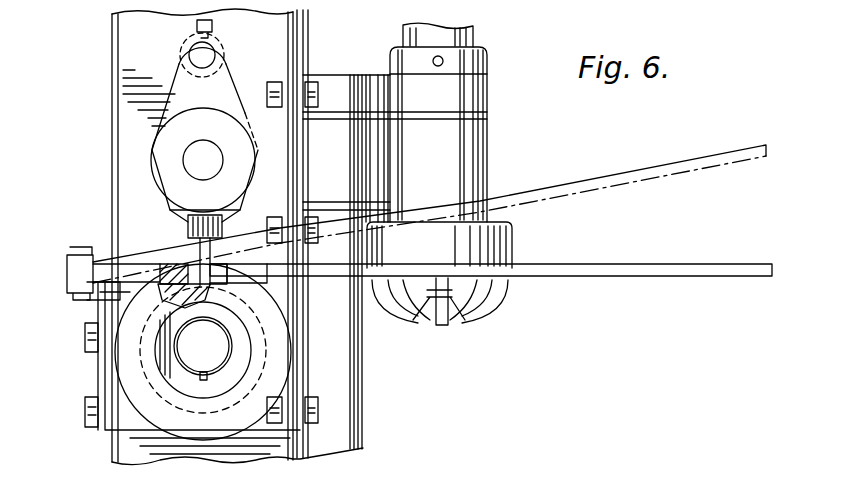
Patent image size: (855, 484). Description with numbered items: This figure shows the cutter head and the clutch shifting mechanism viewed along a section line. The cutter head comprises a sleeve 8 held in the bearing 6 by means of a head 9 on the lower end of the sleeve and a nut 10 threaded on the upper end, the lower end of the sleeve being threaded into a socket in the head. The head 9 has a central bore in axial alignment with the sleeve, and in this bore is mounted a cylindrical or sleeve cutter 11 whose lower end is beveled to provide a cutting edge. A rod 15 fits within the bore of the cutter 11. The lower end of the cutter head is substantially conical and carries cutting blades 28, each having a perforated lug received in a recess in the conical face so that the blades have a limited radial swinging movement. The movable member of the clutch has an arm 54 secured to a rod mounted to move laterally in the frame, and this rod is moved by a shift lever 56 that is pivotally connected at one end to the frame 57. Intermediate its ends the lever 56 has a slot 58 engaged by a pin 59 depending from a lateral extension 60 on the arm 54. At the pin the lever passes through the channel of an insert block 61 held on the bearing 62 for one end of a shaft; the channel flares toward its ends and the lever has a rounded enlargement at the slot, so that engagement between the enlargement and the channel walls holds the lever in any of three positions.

The bearing 6 is at (488, 102).
The sleeve 8 is at (475, 38).
The head 9 is at (513, 231).
The nut 10 is at (488, 62).
The sleeve cutter 11 is at (458, 324).
The rod 15 is at (443, 325).
The cutting blade 28 is at (497, 303).
The arm 54 is at (218, 52).
The shift lever 56 is at (641, 268).
The frame 57 is at (73, 250).
The slot 58 is at (187, 283).
The pin 59 is at (200, 249).
The lateral extension 60 is at (183, 210).
The insert block 61 is at (190, 277).
The bearing 62 is at (140, 378).